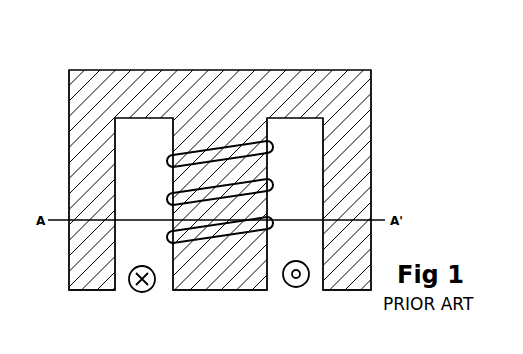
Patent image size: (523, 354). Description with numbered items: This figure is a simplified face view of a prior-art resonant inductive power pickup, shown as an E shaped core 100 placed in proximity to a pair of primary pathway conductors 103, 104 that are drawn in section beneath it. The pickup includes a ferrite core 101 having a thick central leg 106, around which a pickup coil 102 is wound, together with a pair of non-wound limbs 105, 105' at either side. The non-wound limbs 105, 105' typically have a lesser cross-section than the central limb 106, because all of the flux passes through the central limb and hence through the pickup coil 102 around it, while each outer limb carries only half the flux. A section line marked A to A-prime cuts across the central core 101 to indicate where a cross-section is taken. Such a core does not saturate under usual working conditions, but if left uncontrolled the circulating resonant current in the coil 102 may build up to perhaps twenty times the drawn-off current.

The E shaped core pickup 100 is at (380, 24).
The ferrite core 101 is at (371, 96).
The pickup coil 102 is at (303, 189).
The primary pathway conductor 103 is at (134, 291).
The primary pathway conductor 104 is at (289, 287).
The non-wound limb 105 is at (71, 180).
The non-wound limb 105' is at (365, 180).
The central leg 106 is at (208, 291).